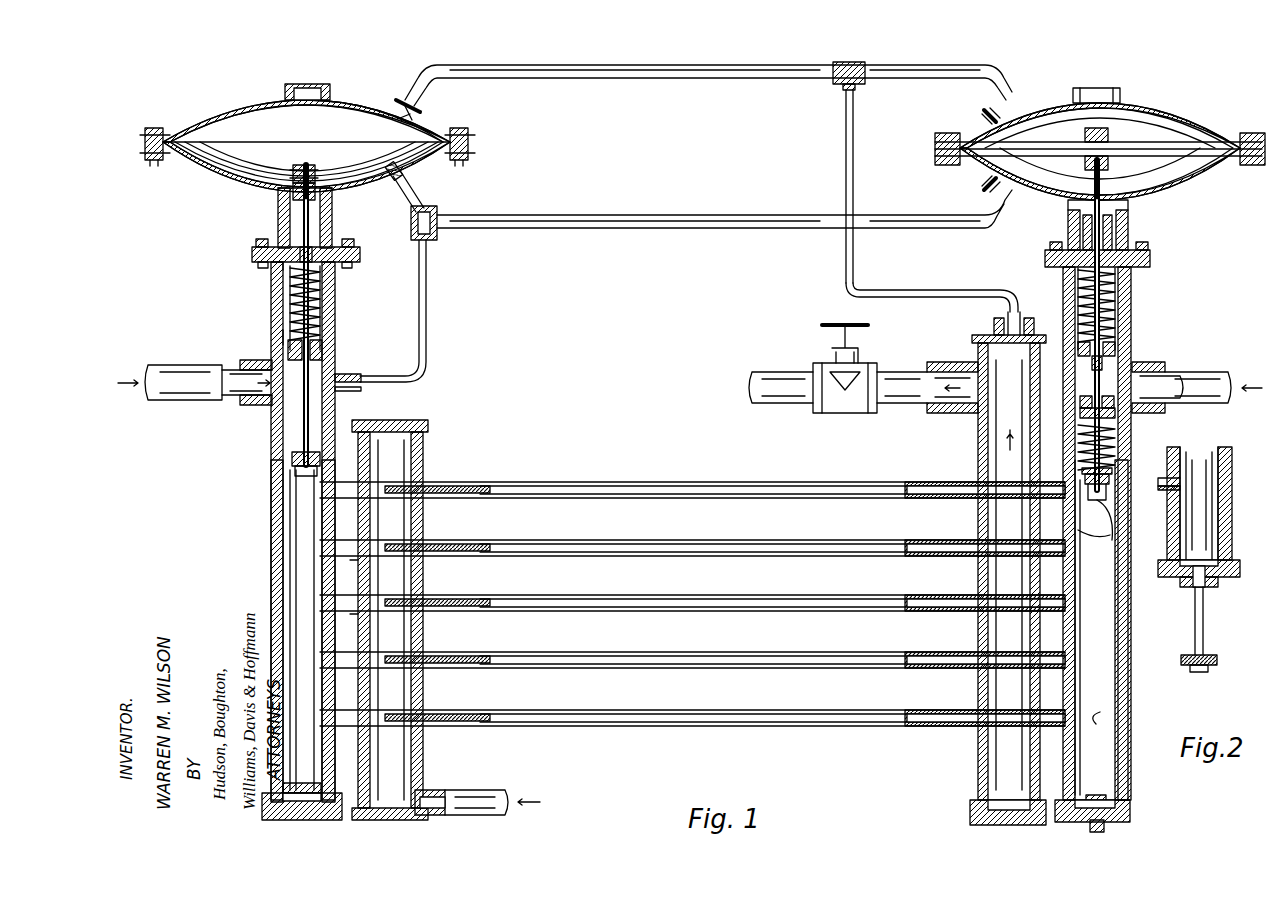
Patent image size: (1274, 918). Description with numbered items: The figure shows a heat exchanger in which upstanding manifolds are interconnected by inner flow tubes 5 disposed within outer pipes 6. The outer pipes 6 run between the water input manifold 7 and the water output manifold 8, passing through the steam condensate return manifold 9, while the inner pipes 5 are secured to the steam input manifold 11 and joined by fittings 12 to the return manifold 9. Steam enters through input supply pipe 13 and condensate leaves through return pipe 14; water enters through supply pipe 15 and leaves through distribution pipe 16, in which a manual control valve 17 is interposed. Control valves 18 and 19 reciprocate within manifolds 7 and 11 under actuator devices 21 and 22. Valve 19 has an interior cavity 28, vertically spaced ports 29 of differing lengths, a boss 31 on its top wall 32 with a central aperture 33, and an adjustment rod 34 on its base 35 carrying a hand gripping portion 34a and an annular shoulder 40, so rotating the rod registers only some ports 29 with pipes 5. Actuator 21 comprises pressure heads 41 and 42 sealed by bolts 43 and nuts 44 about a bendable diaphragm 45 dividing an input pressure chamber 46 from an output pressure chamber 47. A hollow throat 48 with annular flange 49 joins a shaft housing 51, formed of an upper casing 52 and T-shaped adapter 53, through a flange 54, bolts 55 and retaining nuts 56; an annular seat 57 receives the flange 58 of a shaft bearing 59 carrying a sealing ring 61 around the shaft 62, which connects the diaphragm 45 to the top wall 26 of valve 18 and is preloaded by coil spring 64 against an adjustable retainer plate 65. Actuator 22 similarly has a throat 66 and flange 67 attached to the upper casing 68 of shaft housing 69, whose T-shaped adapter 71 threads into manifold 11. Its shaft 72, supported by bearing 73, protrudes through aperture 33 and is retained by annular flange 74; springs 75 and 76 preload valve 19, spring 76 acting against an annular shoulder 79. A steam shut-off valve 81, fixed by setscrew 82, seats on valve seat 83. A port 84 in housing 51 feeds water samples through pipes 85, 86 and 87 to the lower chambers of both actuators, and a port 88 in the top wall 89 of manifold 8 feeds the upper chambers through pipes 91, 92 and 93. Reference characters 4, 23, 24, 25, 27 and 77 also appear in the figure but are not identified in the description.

In FIG. 1, the heat exchange tubes 4 is at (589, 537).
In FIG. 1, the flow tubes 5 is at (494, 556).
In FIG. 2, the flow tubes 5 is at (1176, 476).
In FIG. 1, the outer pipe 6 is at (358, 614).
In FIG. 1, the water input manifold 7 is at (266, 524).
In FIG. 1, the water output manifold 8 is at (976, 440).
In FIG. 1, the steam condensate return manifold 9 is at (420, 628).
In FIG. 1, the steam input manifold 11 is at (1127, 642).
In FIG. 2, the steam input manifold 11 is at (1232, 494).
In FIG. 1, the fittings 12 is at (376, 652).
In FIG. 1, the input supply pipe 13 is at (1218, 374).
In FIG. 1, the steam condensate return pipe 14 is at (474, 790).
In FIG. 1, the supply pipe 15 is at (197, 366).
In FIG. 1, the distribution pipe 16 is at (776, 367).
In FIG. 1, the control valve 17 is at (818, 358).
In FIG. 1, the control valve 18 is at (268, 560).
In FIG. 1, the control valve 19 is at (1127, 690).
In FIG. 2, the control valve 19 is at (1230, 558).
In FIG. 1, the actuator device 21 is at (218, 114).
In FIG. 1, the actuator device 22 is at (1201, 128).
In FIG. 1, the inner sleeve 23 is at (284, 594).
In FIG. 1, the passage 24 is at (312, 640).
In FIG. 1, the base flange 25 is at (278, 774).
In FIG. 1, the top horizontal wall 26 is at (280, 466).
In FIG. 1, the bottom plate 27 is at (308, 788).
In FIG. 1, the interior cavity 28 is at (1119, 712).
In FIG. 1, the ports 29 is at (1087, 542).
In FIG. 2, the ports 29 is at (1198, 508).
In FIG. 1, the boss 31 is at (1111, 476).
In FIG. 1, the top wall 32 is at (1105, 468).
In FIG. 1, the central aperture 33 is at (1107, 490).
In FIG. 1, the adjustment rod 34 is at (1102, 783).
In FIG. 2, the adjustment rod 34 is at (1206, 630).
In FIG. 2, the hand gripping portion 34a is at (1212, 664).
In FIG. 1, the base 35 is at (1132, 822).
In FIG. 2, the base 35 is at (1212, 592).
In FIG. 2, the annular shoulder 40 is at (1180, 596).
In FIG. 1, the pressure head 41 is at (385, 98).
In FIG. 1, the pressure head 42 is at (198, 176).
In FIG. 1, the bolts 43 is at (160, 134).
In FIG. 1, the nuts 44 is at (147, 158).
In FIG. 1, the bendable diaphragm 45 is at (227, 182).
In FIG. 1, the input pressure chamber 46 is at (268, 190).
In FIG. 1, the output pressure chamber 47 is at (266, 104).
In FIG. 1, the hollow throat 48 is at (274, 224).
In FIG. 1, the annular flange 49 is at (352, 250).
In FIG. 1, the shaft housing 51 is at (266, 305).
In FIG. 1, the upper hollow casing 52 is at (342, 292).
In FIG. 1, the T-shaped adapter 53 is at (272, 340).
In FIG. 1, the flange 54 is at (252, 254).
In FIG. 1, the bolts 55 is at (354, 240).
In FIG. 1, the retaining nuts 56 is at (352, 264).
In FIG. 1, the annular seat 57 is at (254, 244).
In FIG. 1, the flange 58 is at (274, 266).
In FIG. 1, the shaft bearing 59 is at (334, 194).
In FIG. 1, the sealing ring 61 is at (328, 208).
In FIG. 1, the shaft 62 is at (336, 364).
In FIG. 1, the coil spring 64 is at (344, 306).
In FIG. 1, the adjustable retainer plate 65 is at (340, 340).
In FIG. 1, the throat 66 is at (1129, 216).
In FIG. 1, the flange 67 is at (1149, 250).
In FIG. 1, the upper casing 68 is at (1132, 280).
In FIG. 1, the shaft housing 69 is at (1144, 301).
In FIG. 1, the T-shaped adapter 71 is at (1120, 362).
In FIG. 1, the shaft 72 is at (1106, 320).
In FIG. 1, the bearing 73 is at (1109, 220).
In FIG. 1, the annular flange 74 is at (1113, 514).
In FIG. 1, the spring member 75 is at (1110, 342).
In FIG. 1, the spring member 76 is at (1117, 434).
In FIG. 1, the spring seat 77 is at (1107, 354).
In FIG. 1, the annular shoulder 79 is at (1132, 414).
In FIG. 1, the steam shut-off valve 81 is at (1078, 402).
In FIG. 1, the setscrew 82 is at (1112, 384).
In FIG. 1, the valve seat 83 is at (1080, 406).
In FIG. 1, the port 84 is at (345, 388).
In FIG. 1, the pipe 85 is at (424, 308).
In FIG. 1, the pipe 86 is at (428, 186).
In FIG. 1, the pipe 87 is at (686, 228).
In FIG. 1, the port 88 is at (992, 328).
In FIG. 1, the top wall 89 is at (1042, 328).
In FIG. 1, the pipe 91 is at (970, 270).
In FIG. 1, the pipe 92 is at (942, 78).
In FIG. 1, the pipe 93 is at (776, 76).